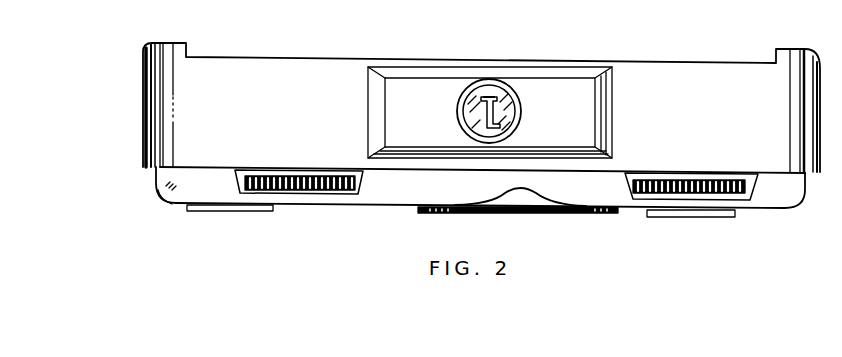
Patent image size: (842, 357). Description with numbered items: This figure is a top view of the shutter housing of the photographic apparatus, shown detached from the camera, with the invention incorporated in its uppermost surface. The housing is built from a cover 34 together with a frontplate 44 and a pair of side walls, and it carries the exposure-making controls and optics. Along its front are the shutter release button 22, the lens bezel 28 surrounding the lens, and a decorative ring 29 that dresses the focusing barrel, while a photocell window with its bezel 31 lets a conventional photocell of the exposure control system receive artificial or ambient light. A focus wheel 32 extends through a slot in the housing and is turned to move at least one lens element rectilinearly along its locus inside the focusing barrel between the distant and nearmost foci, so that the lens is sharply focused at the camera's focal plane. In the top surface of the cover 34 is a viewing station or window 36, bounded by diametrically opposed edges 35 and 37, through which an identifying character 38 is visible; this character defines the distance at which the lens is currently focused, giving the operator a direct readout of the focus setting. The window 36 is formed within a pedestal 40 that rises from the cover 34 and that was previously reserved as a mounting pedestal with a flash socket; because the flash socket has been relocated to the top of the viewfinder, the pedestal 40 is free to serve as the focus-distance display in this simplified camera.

The shutter release button 22 is at (216, 212).
The lens bezel 28 is at (537, 203).
The decorative ring 29 is at (591, 214).
The bezel 31 is at (667, 218).
The focus wheel 32 is at (360, 183).
The cover 34 is at (713, 77).
The edge 35 is at (462, 112).
The viewing station or window 36 is at (499, 108).
The edge 37 is at (517, 119).
The identifying character 38 is at (490, 96).
The pedestal 40 is at (597, 127).
The frontplate 44 is at (168, 194).